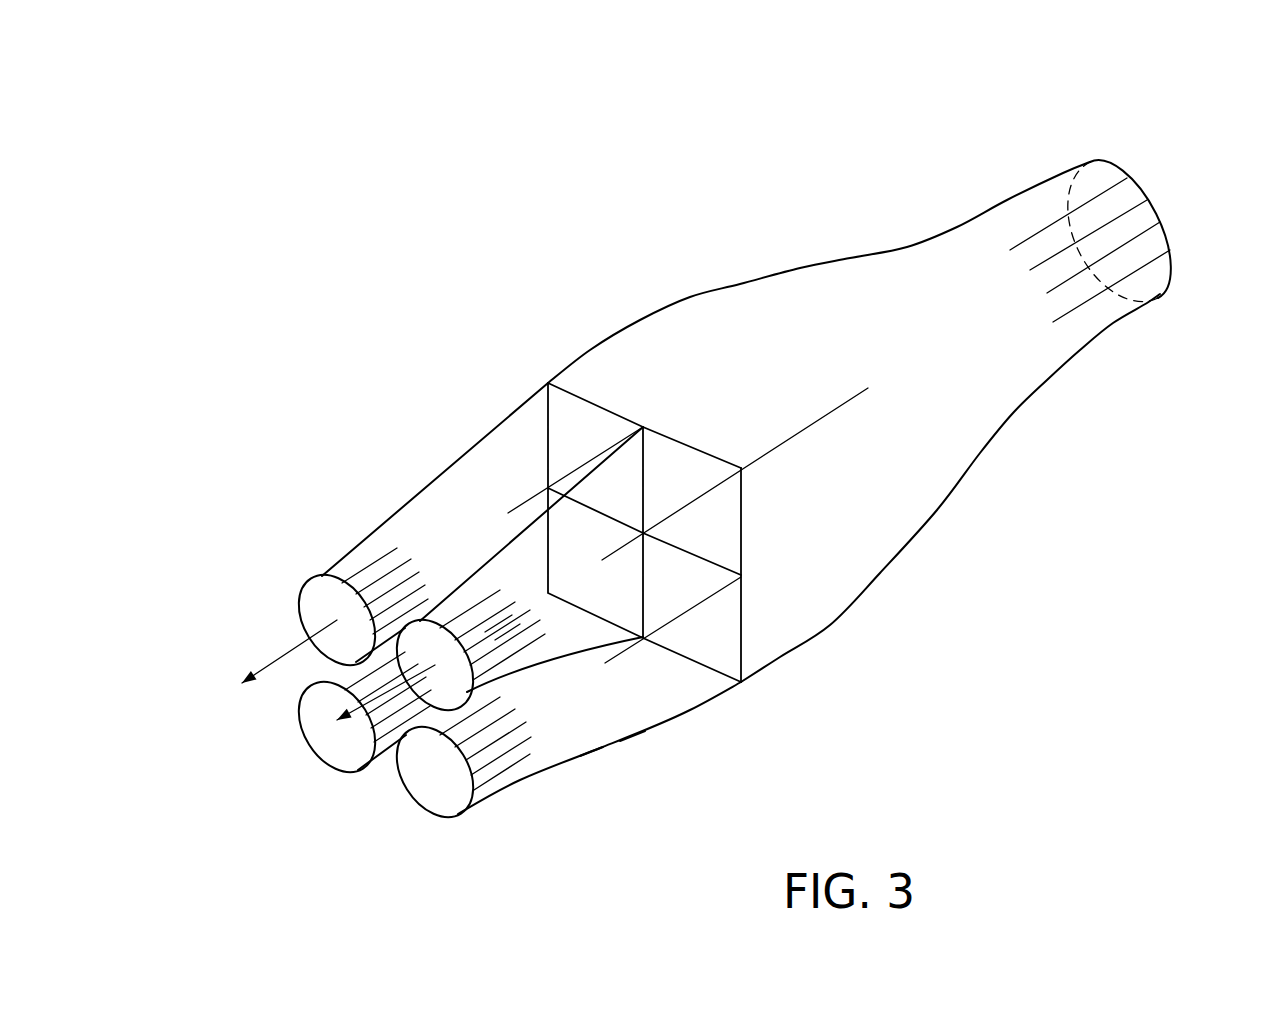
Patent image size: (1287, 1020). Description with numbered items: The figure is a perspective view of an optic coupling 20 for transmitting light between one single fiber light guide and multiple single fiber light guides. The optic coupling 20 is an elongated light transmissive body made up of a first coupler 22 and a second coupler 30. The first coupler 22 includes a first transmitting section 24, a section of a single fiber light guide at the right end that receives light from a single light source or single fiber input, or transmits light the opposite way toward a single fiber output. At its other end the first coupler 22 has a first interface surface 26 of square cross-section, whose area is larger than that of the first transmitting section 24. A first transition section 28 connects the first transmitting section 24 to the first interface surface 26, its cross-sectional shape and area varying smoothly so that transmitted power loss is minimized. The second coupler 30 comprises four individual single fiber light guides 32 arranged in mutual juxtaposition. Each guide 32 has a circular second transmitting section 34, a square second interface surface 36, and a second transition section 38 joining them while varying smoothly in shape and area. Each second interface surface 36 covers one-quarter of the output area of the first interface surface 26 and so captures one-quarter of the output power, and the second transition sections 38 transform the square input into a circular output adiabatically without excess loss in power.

The optic coupling 20 is at (700, 163).
The first coupler 22 is at (800, 268).
The first transmitting section 24 is at (1172, 258).
The first interface surface 26 is at (738, 643).
The first transition section 28 is at (938, 510).
The second coupler 30 is at (697, 735).
The individual single fiber light guides 32 is at (603, 748).
The second transmitting section 34 is at (457, 815).
The second interface surface 36 is at (742, 618).
The second transition section 38 is at (633, 737).